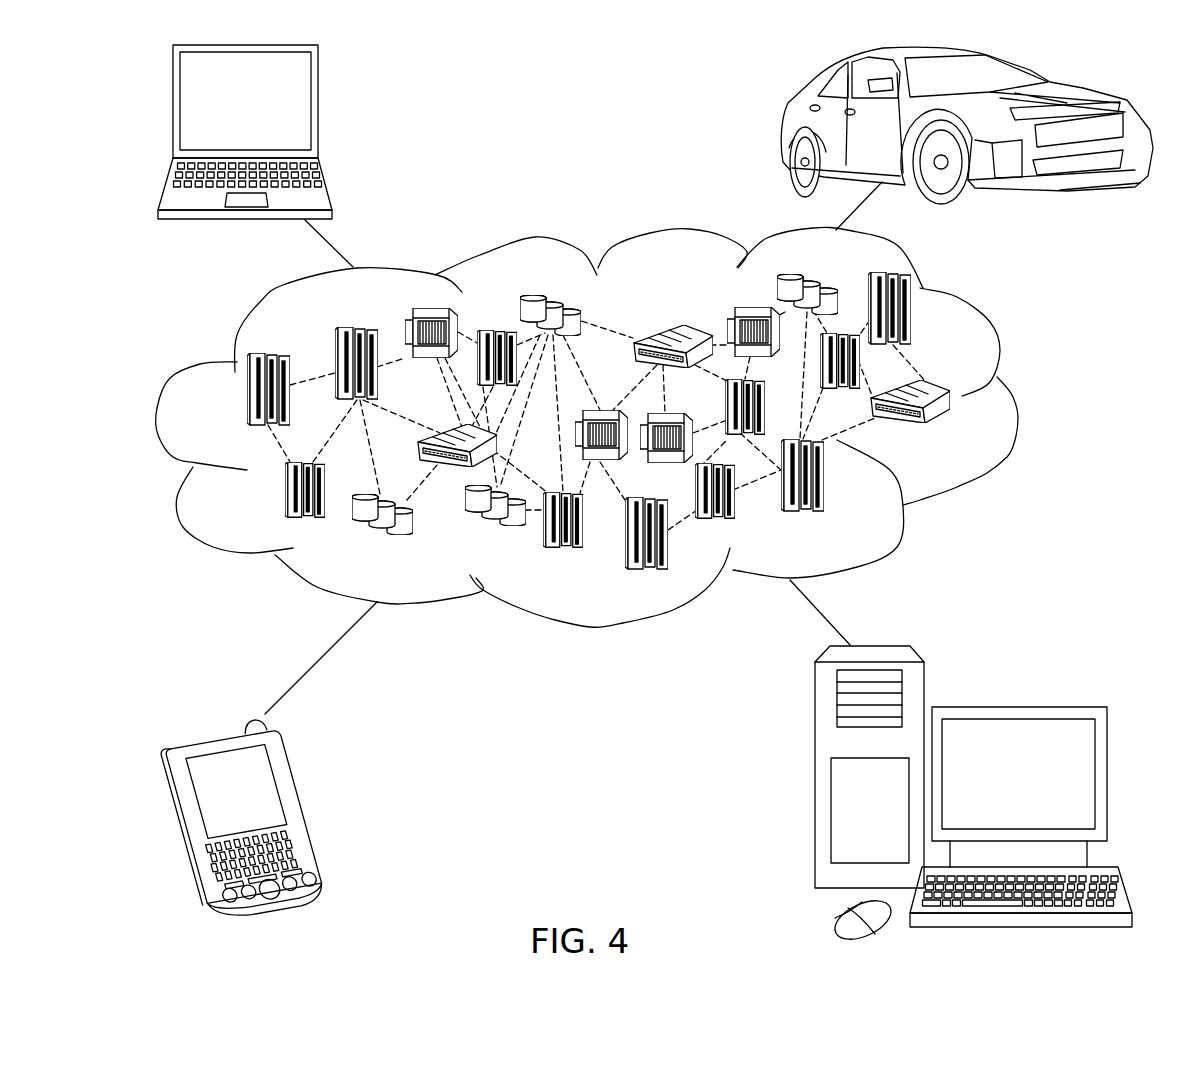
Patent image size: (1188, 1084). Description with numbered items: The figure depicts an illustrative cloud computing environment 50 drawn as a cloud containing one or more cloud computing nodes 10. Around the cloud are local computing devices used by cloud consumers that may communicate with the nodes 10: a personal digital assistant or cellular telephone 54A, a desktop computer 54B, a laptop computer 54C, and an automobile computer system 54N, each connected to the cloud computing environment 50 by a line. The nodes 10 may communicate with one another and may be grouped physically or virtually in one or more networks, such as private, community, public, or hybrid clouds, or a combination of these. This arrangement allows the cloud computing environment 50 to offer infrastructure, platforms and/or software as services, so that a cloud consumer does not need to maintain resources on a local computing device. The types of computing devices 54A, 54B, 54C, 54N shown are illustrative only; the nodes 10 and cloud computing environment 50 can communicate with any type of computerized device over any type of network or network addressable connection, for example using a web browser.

The cloud computing node 10 is at (970, 436).
The cloud computing environment 50 is at (616, 427).
The personal digital assistant or cellular telephone 54A is at (308, 805).
The desktop computer 54B is at (1015, 707).
The laptop computer 54C is at (318, 111).
The automobile computer system 54N is at (783, 128).